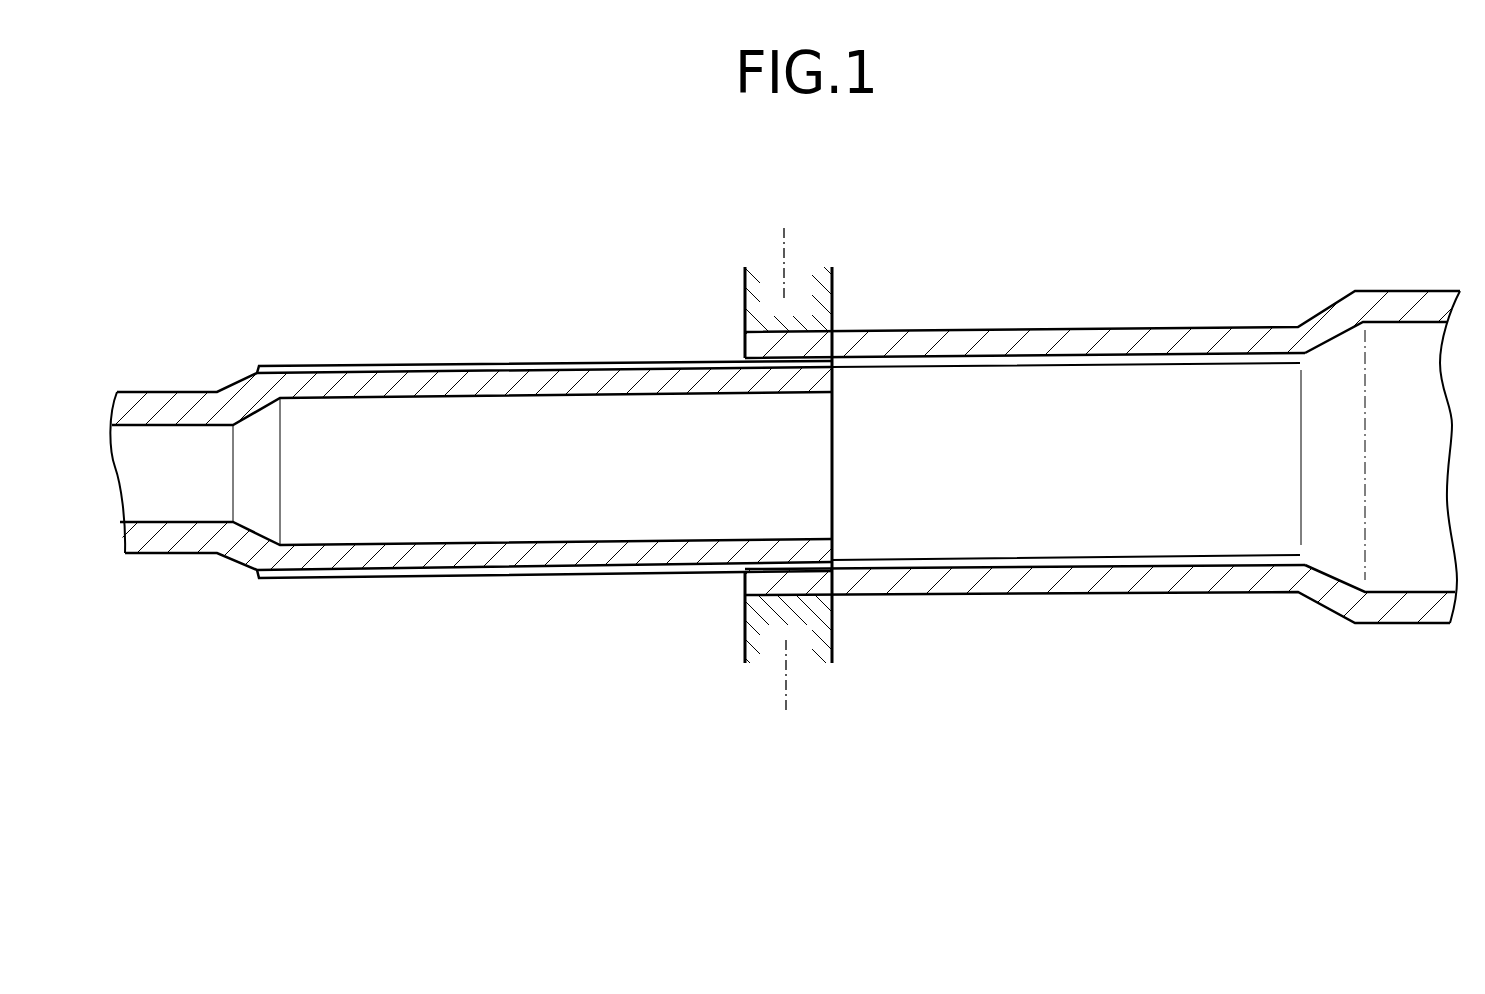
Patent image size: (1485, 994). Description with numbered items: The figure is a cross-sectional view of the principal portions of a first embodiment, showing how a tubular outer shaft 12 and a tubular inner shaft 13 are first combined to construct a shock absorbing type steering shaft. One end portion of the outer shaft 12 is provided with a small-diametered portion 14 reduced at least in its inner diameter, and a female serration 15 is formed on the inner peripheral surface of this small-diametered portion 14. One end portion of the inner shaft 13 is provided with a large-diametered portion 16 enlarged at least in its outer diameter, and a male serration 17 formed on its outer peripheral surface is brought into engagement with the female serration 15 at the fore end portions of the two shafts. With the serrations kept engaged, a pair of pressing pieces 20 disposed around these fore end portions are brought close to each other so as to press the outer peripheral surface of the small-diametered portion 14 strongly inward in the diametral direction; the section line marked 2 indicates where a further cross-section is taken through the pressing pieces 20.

The outer shaft 12 is at (1118, 340).
The inner shaft 13 is at (384, 579).
The small-diametered portion 14 is at (1047, 590).
The female serration 15 is at (1153, 553).
The large-diametered portion 16 is at (593, 378).
The male serration 17 is at (457, 364).
The pressing pieces 20 is at (813, 286).
The section line 2- 2 is at (800, 467).